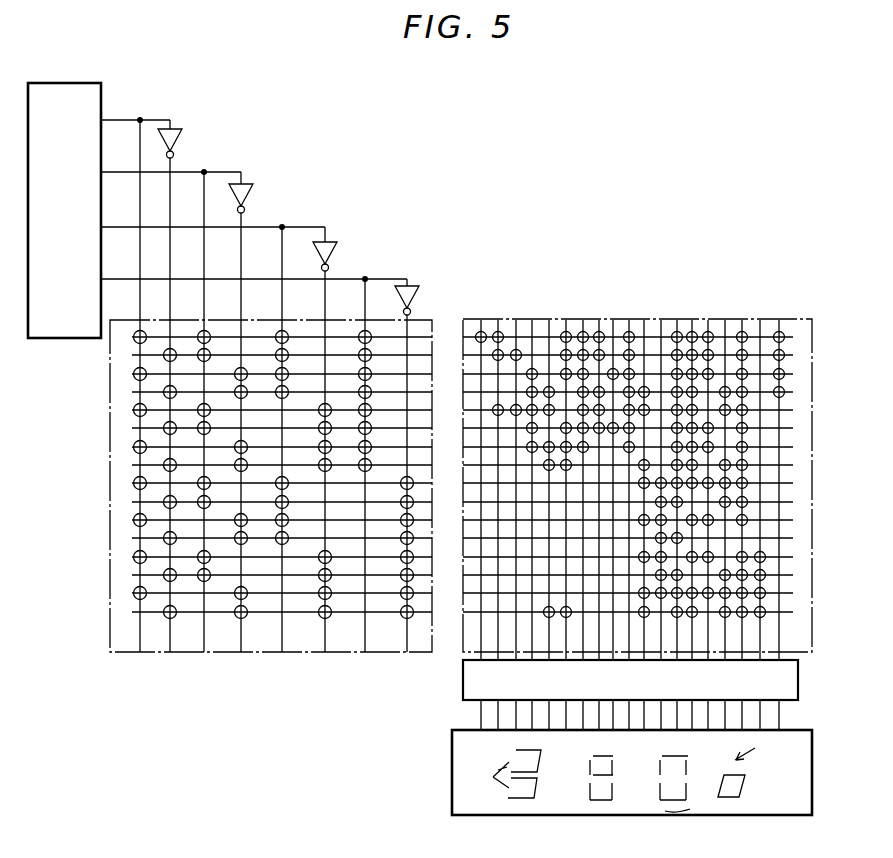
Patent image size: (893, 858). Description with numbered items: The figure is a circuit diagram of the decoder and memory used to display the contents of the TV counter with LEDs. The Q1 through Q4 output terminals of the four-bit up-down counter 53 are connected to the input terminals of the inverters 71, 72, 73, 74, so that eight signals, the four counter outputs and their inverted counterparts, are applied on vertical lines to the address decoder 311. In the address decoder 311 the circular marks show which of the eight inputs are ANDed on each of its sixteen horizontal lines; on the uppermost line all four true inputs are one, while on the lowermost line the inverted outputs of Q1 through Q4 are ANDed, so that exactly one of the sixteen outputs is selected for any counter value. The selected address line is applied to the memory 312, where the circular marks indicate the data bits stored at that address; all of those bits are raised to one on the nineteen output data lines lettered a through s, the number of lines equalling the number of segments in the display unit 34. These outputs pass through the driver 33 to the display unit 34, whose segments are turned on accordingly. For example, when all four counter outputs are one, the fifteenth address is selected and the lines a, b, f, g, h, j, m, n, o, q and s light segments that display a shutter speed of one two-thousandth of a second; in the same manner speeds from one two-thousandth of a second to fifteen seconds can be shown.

The four-bit up-down counter 53 is at (76, 83).
The inverter 71 is at (183, 140).
The inverter 72 is at (254, 193).
The inverter 73 is at (338, 250).
The inverter 74 is at (413, 283).
The address decoder 311 is at (426, 318).
The memory 312 is at (702, 317).
The driver 33 is at (463, 686).
The display unit 34 is at (452, 768).